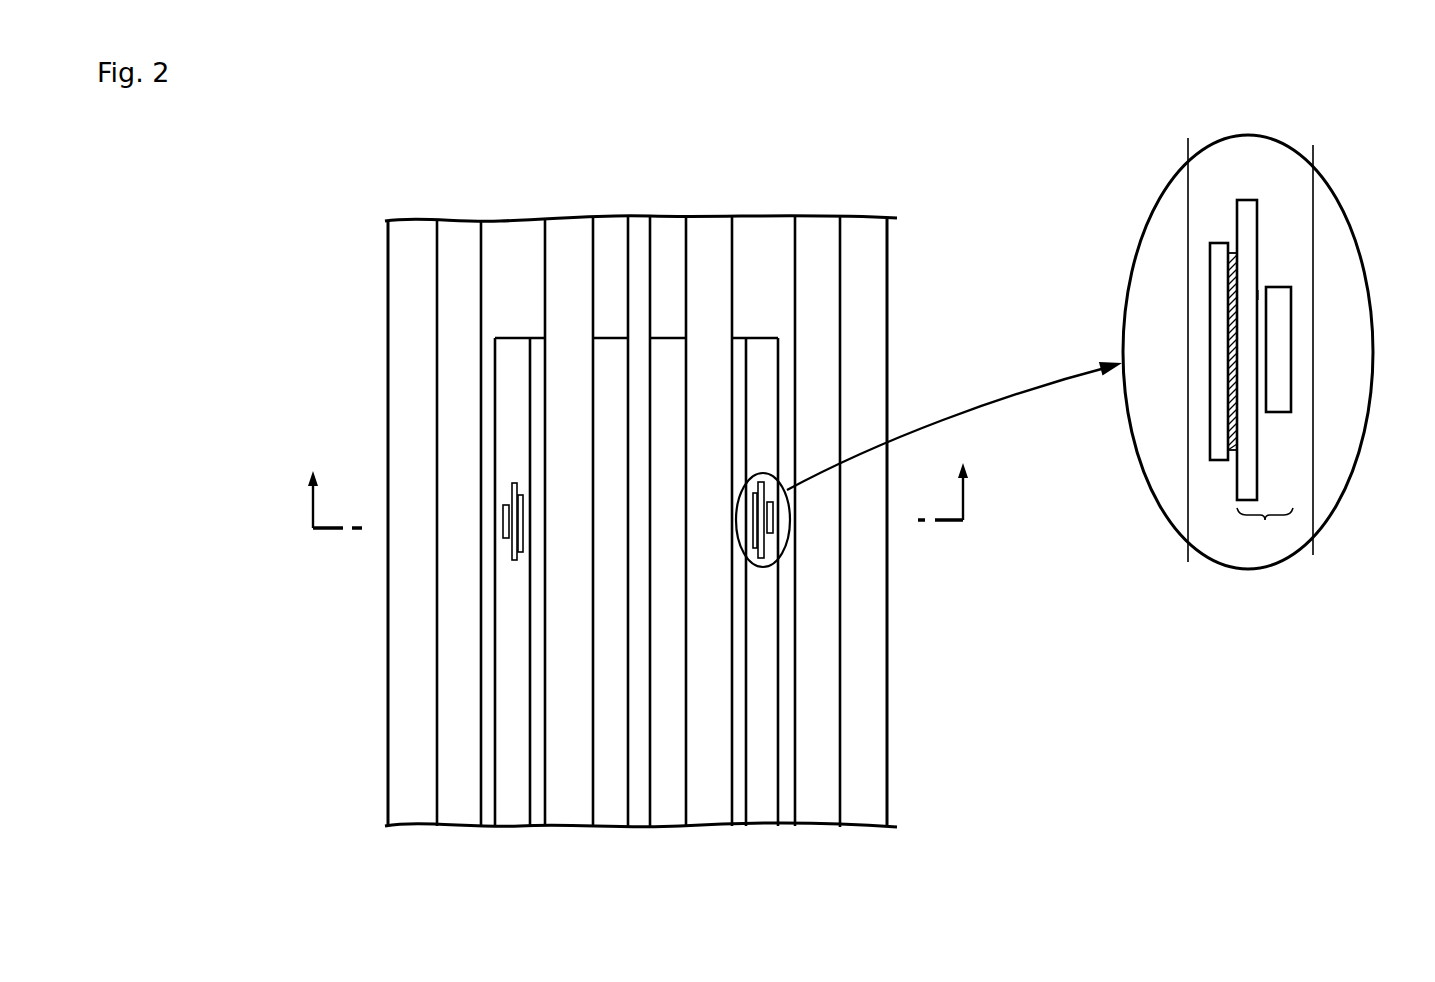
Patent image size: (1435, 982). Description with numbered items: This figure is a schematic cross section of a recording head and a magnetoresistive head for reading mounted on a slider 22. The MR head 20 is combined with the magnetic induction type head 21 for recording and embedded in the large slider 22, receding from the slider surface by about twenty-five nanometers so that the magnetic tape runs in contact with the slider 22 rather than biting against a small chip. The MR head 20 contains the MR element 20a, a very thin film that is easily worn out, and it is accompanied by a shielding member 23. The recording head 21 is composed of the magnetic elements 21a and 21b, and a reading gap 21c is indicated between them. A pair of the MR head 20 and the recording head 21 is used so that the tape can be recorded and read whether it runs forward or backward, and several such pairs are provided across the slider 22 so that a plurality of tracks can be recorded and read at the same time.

The slider 22 is at (878, 317).
The MR head 20 is at (1229, 473).
The MR element 20a is at (1232, 256).
The magnetic induction type head for recording 21 is at (1265, 520).
The magnetic element 21a is at (1247, 207).
The magnetic element 21b is at (1281, 312).
The reading gap 21c is at (1262, 286).
The shielding member 23 is at (1222, 437).